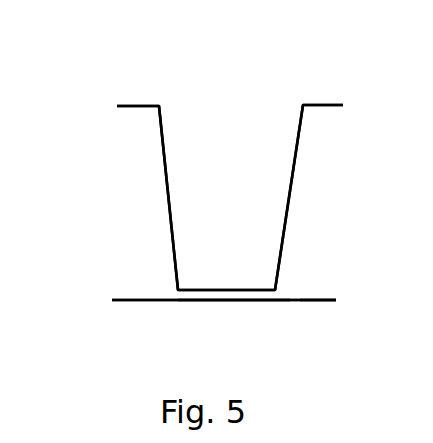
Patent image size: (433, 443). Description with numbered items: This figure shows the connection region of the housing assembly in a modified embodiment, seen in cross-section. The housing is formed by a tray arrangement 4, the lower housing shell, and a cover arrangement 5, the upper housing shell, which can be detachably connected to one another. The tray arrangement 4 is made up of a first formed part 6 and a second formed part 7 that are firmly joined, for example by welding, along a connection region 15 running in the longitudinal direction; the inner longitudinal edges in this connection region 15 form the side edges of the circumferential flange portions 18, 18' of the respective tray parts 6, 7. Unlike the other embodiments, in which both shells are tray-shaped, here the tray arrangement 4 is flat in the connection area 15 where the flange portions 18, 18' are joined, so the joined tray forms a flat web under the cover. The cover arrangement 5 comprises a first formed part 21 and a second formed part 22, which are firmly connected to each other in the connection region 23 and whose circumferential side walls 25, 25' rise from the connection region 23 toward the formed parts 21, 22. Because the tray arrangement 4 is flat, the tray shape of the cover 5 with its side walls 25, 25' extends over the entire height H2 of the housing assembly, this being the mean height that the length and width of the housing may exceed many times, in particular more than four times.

The tray arrangement 4 is at (320, 280).
The cover arrangement 5 is at (234, 96).
The first formed part 6 is at (334, 307).
The second formed part 7 is at (124, 355).
The connection region 15 is at (232, 302).
The circumferential flange portion 18 is at (264, 337).
The circumferential flange portion 18' is at (201, 335).
The first formed part 21 is at (322, 97).
The second formed part 22 is at (131, 96).
The connection region 23 is at (231, 276).
The circumferential side wall 25 is at (316, 197).
The groove flank 25' is at (143, 198).
The mean height H2 is at (42, 100).